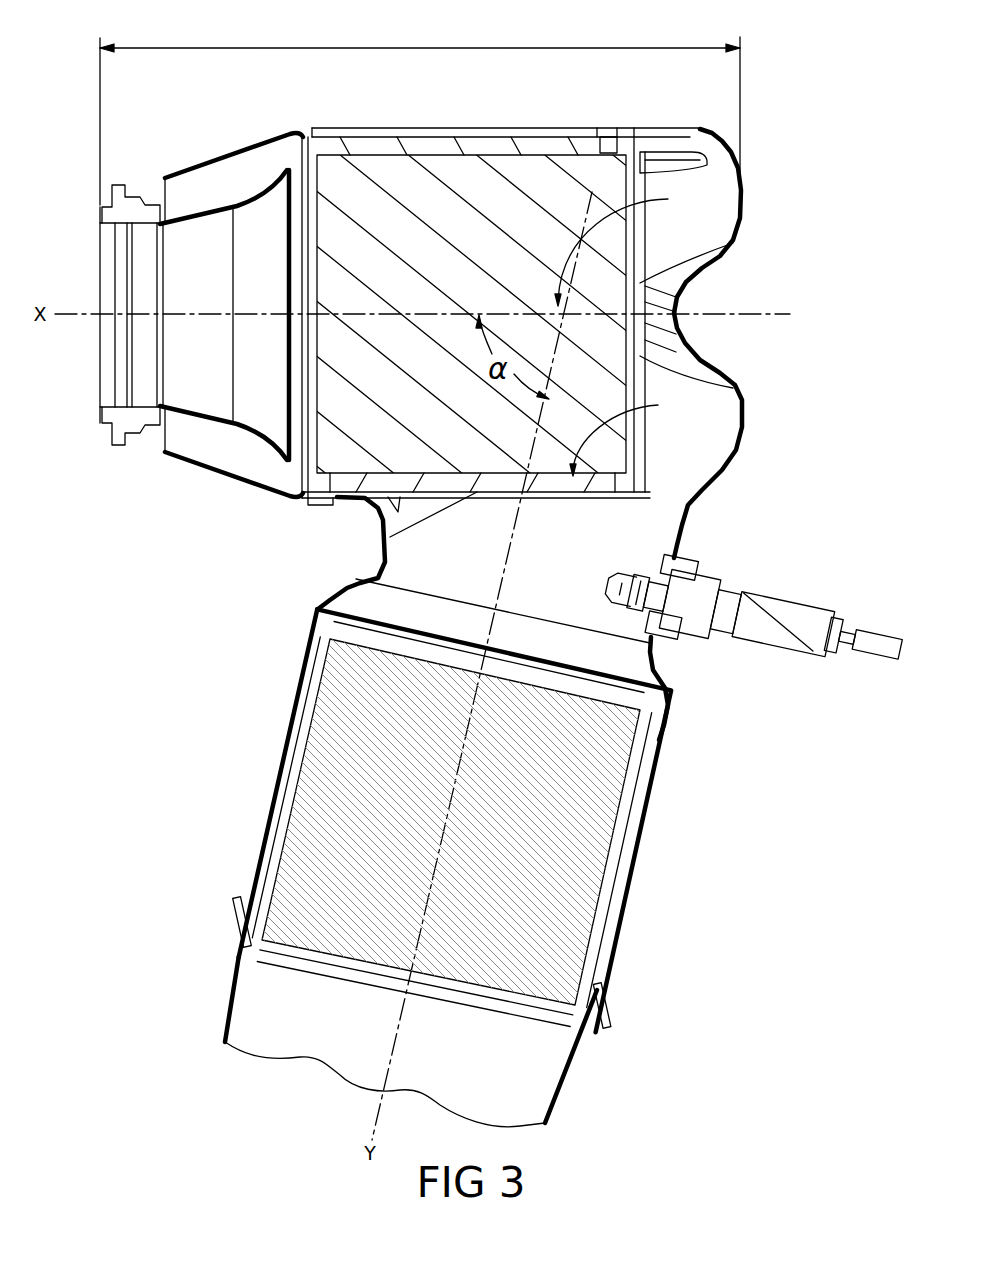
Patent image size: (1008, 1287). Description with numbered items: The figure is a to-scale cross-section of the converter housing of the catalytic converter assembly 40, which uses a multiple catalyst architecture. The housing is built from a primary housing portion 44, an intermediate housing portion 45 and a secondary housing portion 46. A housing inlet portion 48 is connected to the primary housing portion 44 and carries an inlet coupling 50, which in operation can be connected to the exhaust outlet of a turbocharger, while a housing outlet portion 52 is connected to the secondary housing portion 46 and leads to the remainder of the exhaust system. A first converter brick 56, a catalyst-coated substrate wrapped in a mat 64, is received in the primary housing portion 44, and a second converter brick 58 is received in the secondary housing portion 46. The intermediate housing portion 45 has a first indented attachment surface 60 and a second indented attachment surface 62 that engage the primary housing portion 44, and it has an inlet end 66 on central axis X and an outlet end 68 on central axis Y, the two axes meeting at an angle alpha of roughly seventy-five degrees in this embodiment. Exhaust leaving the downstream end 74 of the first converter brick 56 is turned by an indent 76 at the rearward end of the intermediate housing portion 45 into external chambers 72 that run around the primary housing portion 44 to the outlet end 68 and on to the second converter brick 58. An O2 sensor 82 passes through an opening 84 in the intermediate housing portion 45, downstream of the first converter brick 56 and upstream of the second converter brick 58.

The catalytic converter assembly 40 is at (775, 154).
The primary housing portion 44 is at (470, 133).
The intermediate housing portion 45 is at (728, 460).
The secondary housing portion 46 is at (273, 790).
The housing inlet portion 48 is at (241, 152).
The inlet coupling 50 is at (118, 182).
The housing outlet portion 52 is at (567, 1080).
The first converter brick 56 is at (528, 173).
The second converter brick 58 is at (590, 805).
The first indented attachment surface 60 is at (662, 143).
The second indented attachment surface 62 is at (675, 288).
The mat 64 is at (438, 131).
The inlet end 66 is at (322, 503).
The outlet end 68 is at (657, 731).
The external chambers 72 is at (611, 337).
The downstream end 74 is at (632, 393).
The indent 76 is at (658, 300).
The O2 sensor 82 is at (807, 603).
The opening 84 is at (657, 632).